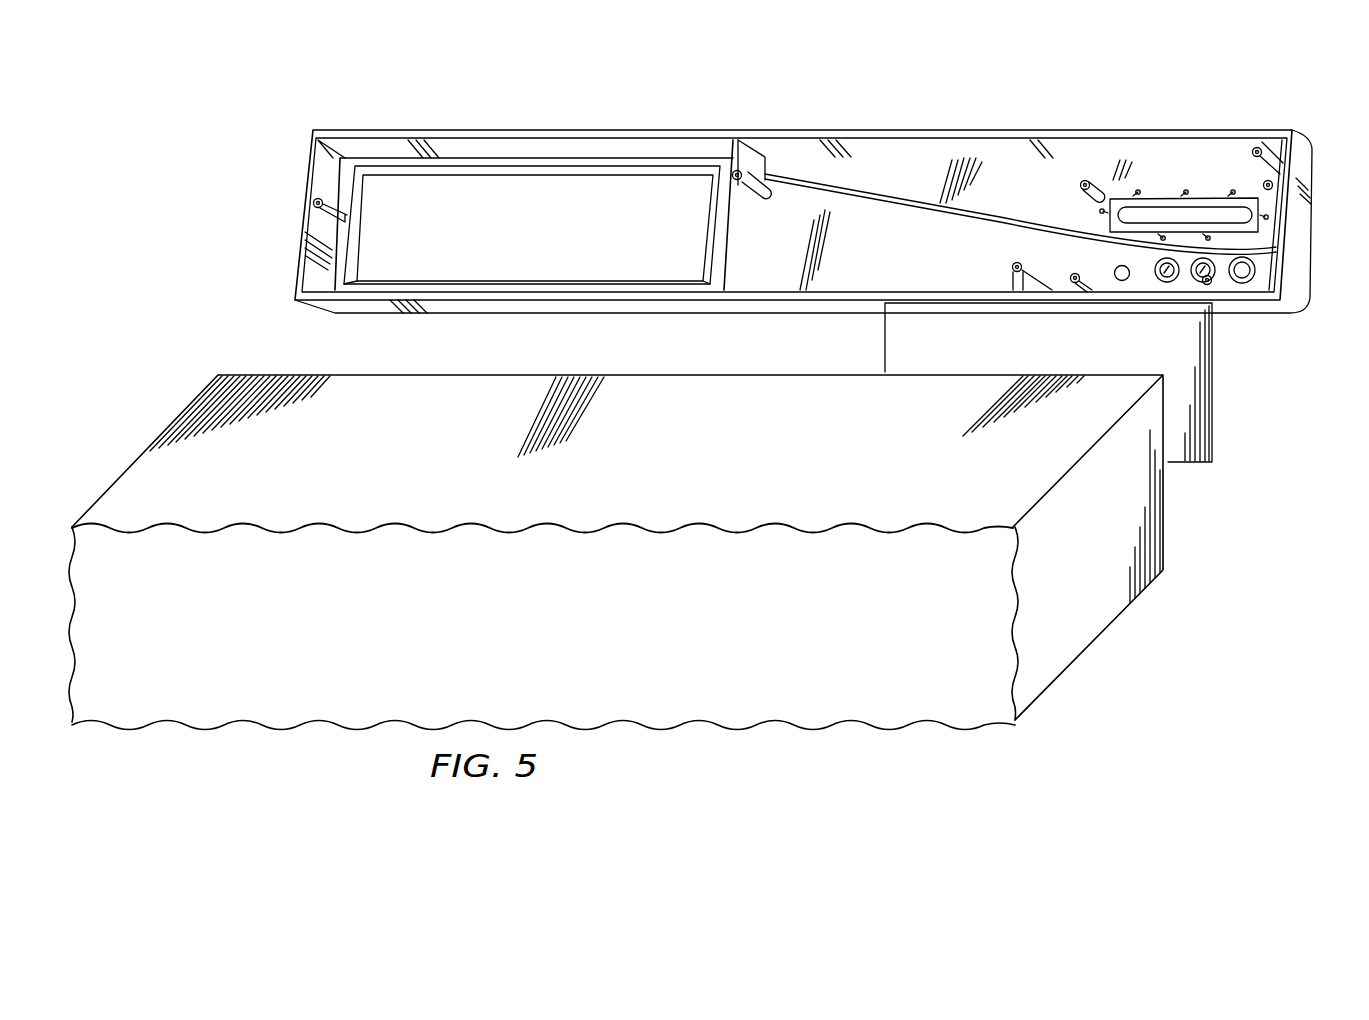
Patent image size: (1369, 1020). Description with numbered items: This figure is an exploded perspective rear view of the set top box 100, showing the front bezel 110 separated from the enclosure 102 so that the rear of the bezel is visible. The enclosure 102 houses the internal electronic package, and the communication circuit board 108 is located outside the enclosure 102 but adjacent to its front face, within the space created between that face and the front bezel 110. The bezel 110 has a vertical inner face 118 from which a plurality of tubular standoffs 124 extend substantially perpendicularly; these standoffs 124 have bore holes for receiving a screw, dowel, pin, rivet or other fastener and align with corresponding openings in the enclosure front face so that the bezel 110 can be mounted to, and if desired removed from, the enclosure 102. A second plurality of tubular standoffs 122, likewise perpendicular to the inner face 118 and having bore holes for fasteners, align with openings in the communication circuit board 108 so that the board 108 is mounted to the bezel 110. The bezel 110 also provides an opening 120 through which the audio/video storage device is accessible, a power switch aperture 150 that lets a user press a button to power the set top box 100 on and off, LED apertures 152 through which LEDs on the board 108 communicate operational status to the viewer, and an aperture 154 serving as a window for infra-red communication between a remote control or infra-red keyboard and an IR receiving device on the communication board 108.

The set top box 100 is at (1122, 727).
The enclosure 102 is at (1077, 645).
The communication circuit board 108 is at (1213, 382).
The front bezel 110 is at (663, 130).
The vertical inner face 118 is at (855, 275).
The opening 120 is at (530, 183).
The tubular standoffs 122 is at (1080, 186).
The tubular standoffs 124 is at (314, 203).
The power switch aperture 150 is at (1114, 272).
The LED apertures 152 is at (1164, 283).
The aperture 154 is at (1150, 213).